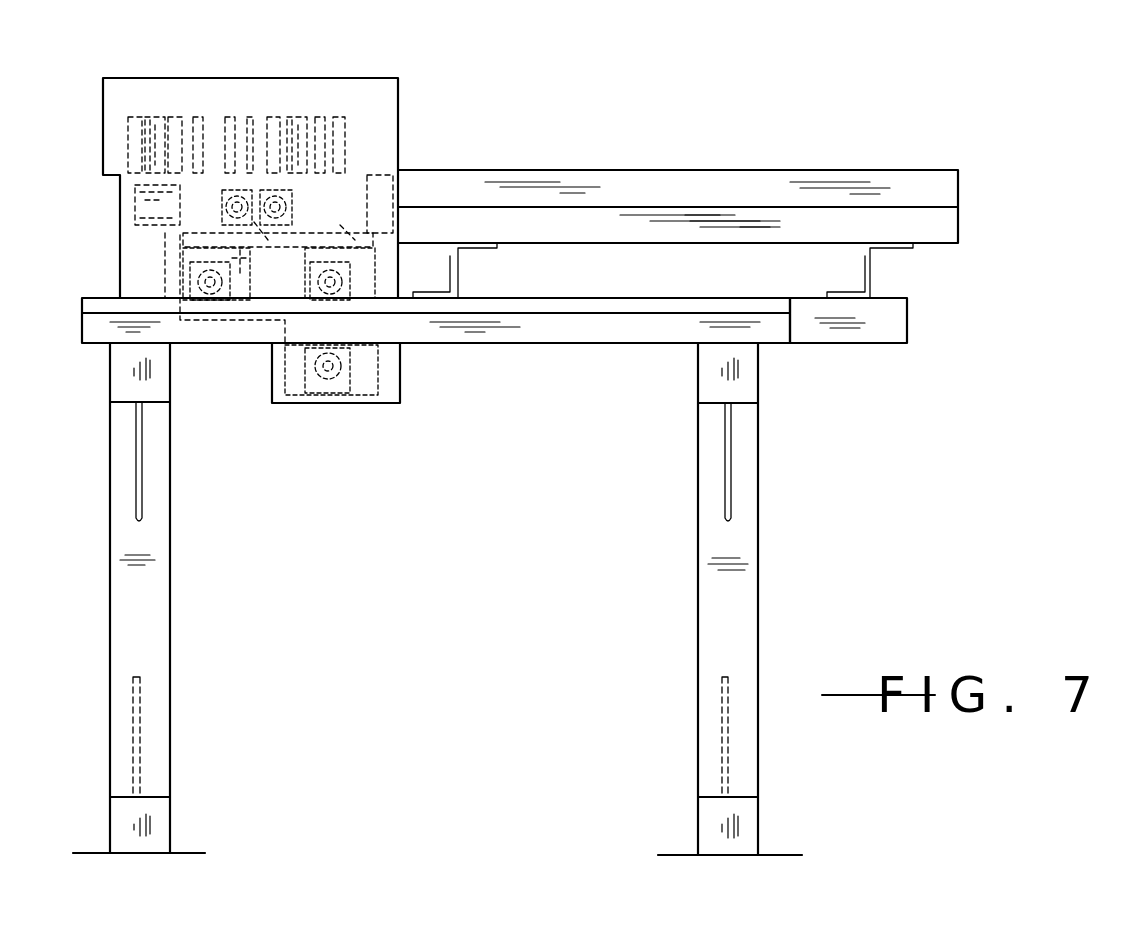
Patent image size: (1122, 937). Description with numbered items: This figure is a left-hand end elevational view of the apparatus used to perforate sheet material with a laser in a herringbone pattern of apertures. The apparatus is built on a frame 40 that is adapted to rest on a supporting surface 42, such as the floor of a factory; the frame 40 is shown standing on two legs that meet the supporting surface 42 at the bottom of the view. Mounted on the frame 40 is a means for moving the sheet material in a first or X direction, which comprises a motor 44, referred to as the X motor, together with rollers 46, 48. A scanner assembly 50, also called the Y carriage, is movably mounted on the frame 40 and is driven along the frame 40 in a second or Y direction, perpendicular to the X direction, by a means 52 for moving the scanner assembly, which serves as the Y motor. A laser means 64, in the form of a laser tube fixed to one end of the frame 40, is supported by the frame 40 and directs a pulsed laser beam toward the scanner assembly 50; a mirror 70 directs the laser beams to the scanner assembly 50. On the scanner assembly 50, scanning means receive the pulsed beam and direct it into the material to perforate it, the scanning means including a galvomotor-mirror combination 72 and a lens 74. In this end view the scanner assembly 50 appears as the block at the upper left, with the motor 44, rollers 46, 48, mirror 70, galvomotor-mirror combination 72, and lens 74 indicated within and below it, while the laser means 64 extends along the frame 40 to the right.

The frame 40 is at (185, 594).
The supporting surface 42 is at (192, 853).
The motor 44 is at (333, 390).
The roller 46 is at (342, 303).
The roller 48 is at (212, 303).
The scanner assembly 50 is at (302, 72).
The means for moving scanner assembly 52 is at (155, 203).
The laser means 64 is at (688, 170).
The mirror 70 is at (237, 190).
The galvomotor-mirror combination 72 is at (305, 197).
The lens 74 is at (297, 242).